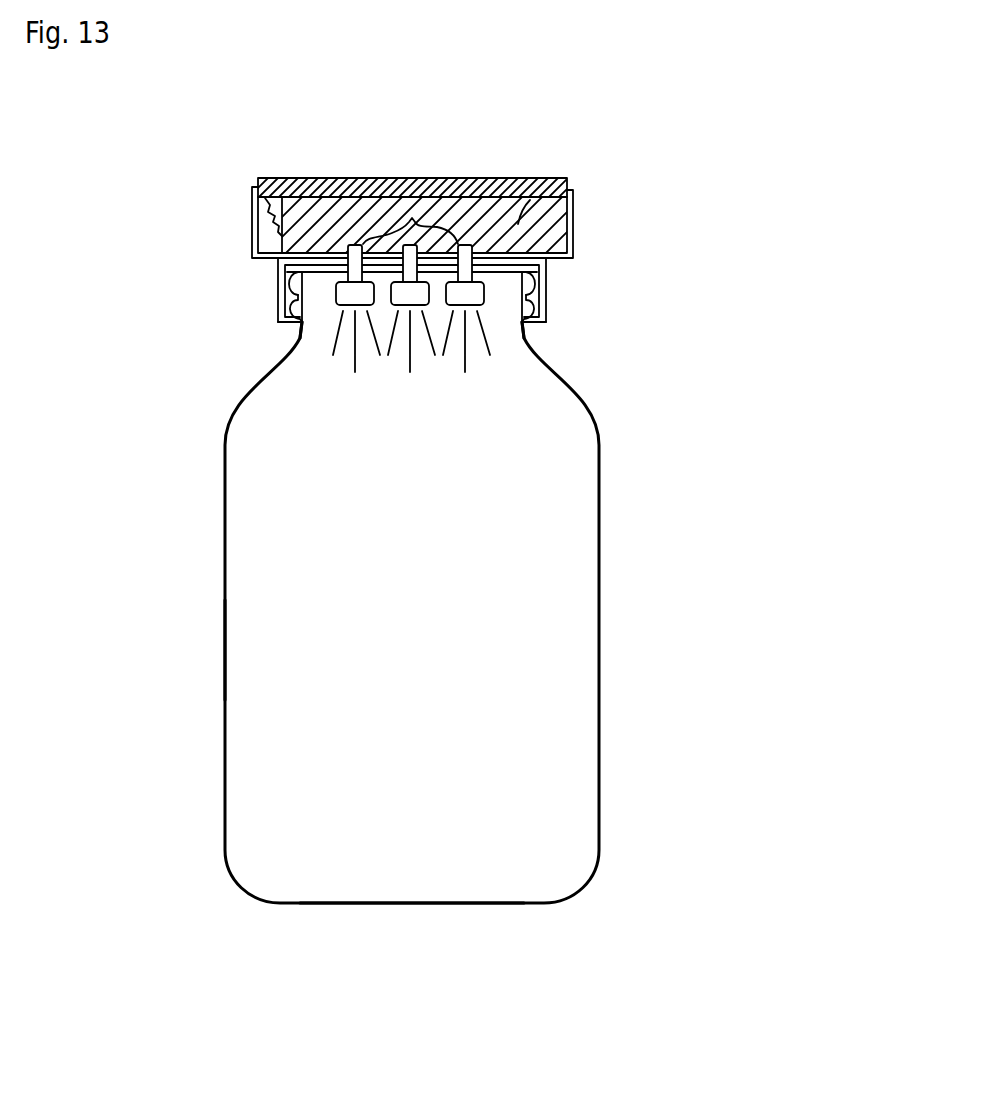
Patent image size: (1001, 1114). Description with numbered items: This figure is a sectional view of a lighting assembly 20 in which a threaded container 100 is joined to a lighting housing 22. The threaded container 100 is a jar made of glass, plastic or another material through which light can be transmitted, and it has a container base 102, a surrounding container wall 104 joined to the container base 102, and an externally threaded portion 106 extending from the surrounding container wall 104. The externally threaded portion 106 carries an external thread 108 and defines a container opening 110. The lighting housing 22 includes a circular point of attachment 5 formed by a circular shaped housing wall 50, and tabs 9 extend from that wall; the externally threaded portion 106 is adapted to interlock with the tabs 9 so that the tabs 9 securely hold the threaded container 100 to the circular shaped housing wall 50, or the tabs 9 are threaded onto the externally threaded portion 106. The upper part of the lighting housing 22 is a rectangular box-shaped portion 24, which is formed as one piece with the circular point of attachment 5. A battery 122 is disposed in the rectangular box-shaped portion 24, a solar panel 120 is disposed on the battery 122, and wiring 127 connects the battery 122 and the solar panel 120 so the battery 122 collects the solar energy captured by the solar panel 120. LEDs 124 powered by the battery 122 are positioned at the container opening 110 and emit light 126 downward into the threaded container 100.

The circular point of attachment 5 is at (547, 292).
The tabs 9 is at (290, 325).
The lighting assembly 20 is at (411, 227).
The lighting housing 22 is at (573, 234).
The rectangular box-shaped portion 24 is at (252, 222).
The circular shaped housing wall 50 is at (547, 305).
The threaded container 100 is at (599, 538).
The container base 102 is at (532, 906).
The surrounding container wall 104 is at (242, 637).
The externally threaded portion 106 is at (295, 303).
The external thread 108 is at (293, 279).
The container opening 110 is at (503, 293).
The solar panel 120 is at (465, 186).
The battery 122 is at (562, 197).
The LEDs 124 is at (374, 300).
The light 126 is at (468, 353).
The wiring 127 is at (263, 202).